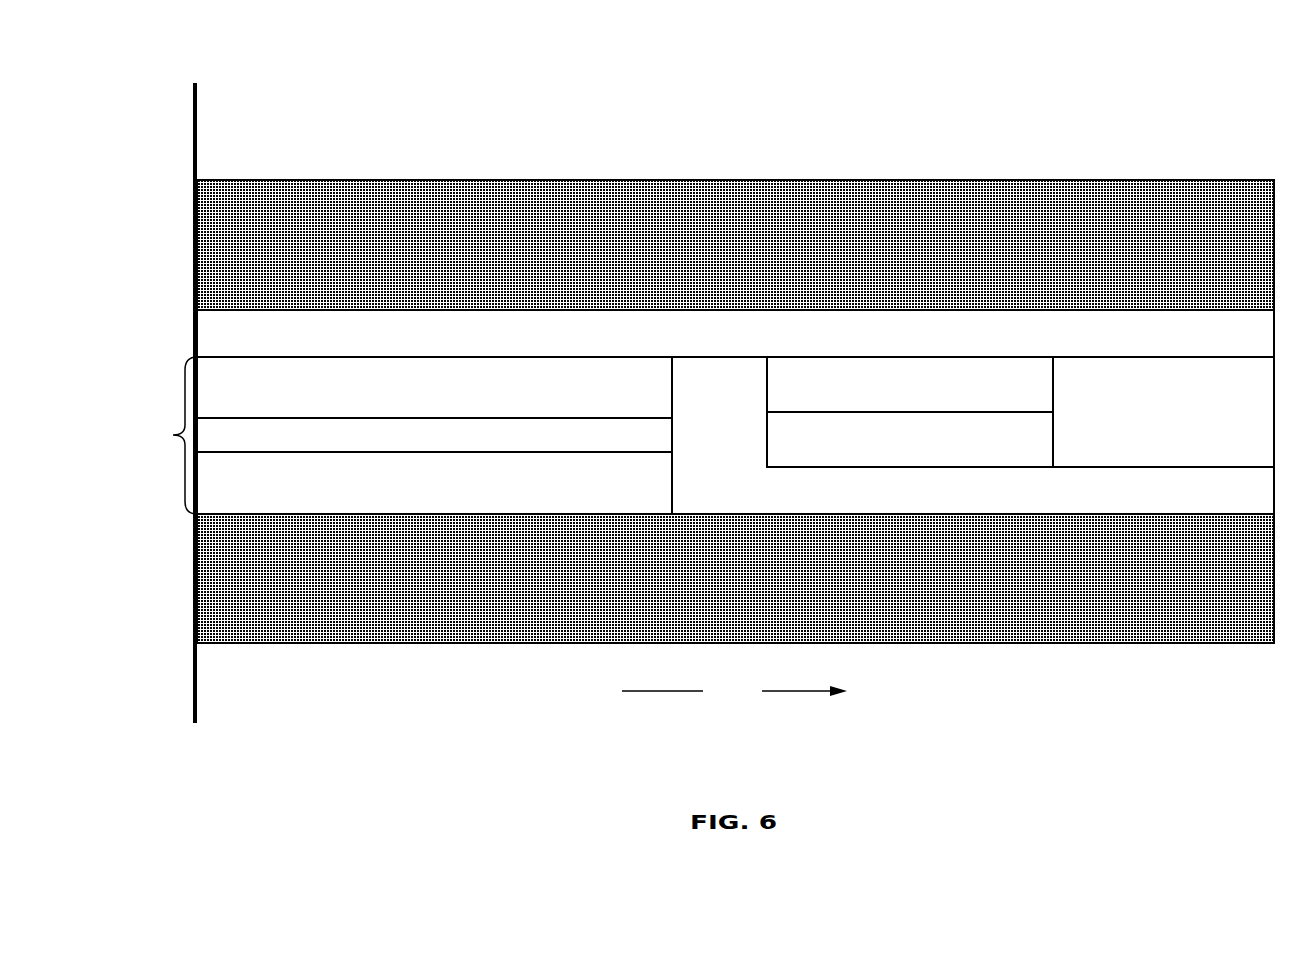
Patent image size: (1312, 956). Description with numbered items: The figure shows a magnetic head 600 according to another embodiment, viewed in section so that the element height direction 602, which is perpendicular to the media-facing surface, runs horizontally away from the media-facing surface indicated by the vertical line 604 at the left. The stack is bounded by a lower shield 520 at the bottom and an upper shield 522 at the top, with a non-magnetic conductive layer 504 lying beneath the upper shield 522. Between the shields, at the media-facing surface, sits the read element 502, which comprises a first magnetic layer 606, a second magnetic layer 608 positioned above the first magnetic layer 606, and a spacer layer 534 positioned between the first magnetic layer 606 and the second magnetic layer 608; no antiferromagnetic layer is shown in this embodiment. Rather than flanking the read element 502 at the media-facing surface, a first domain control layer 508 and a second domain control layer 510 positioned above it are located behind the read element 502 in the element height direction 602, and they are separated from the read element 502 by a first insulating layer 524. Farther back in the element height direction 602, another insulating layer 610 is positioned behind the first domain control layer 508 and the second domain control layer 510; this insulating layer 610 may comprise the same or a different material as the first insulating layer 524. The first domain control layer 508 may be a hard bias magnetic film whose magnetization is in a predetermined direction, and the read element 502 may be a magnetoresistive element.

The magnetic head 600 is at (703, 108).
The element height direction 602 is at (734, 691).
The facet / edge plane 604 is at (193, 131).
The read element 502 is at (162, 435).
The non-magnetic conductive layer 504 is at (753, 343).
The first domain control layer 508 is at (929, 452).
The second domain control layer 510 is at (929, 393).
The lower shield 520 is at (753, 585).
The upper shield 522 is at (753, 245).
The first insulating layer 524 is at (753, 490).
The spacer layer 534 is at (453, 444).
The first magnetic layer 606 is at (453, 500).
The second magnetic layer 608 is at (453, 393).
The insulating layer 610 is at (1183, 421).